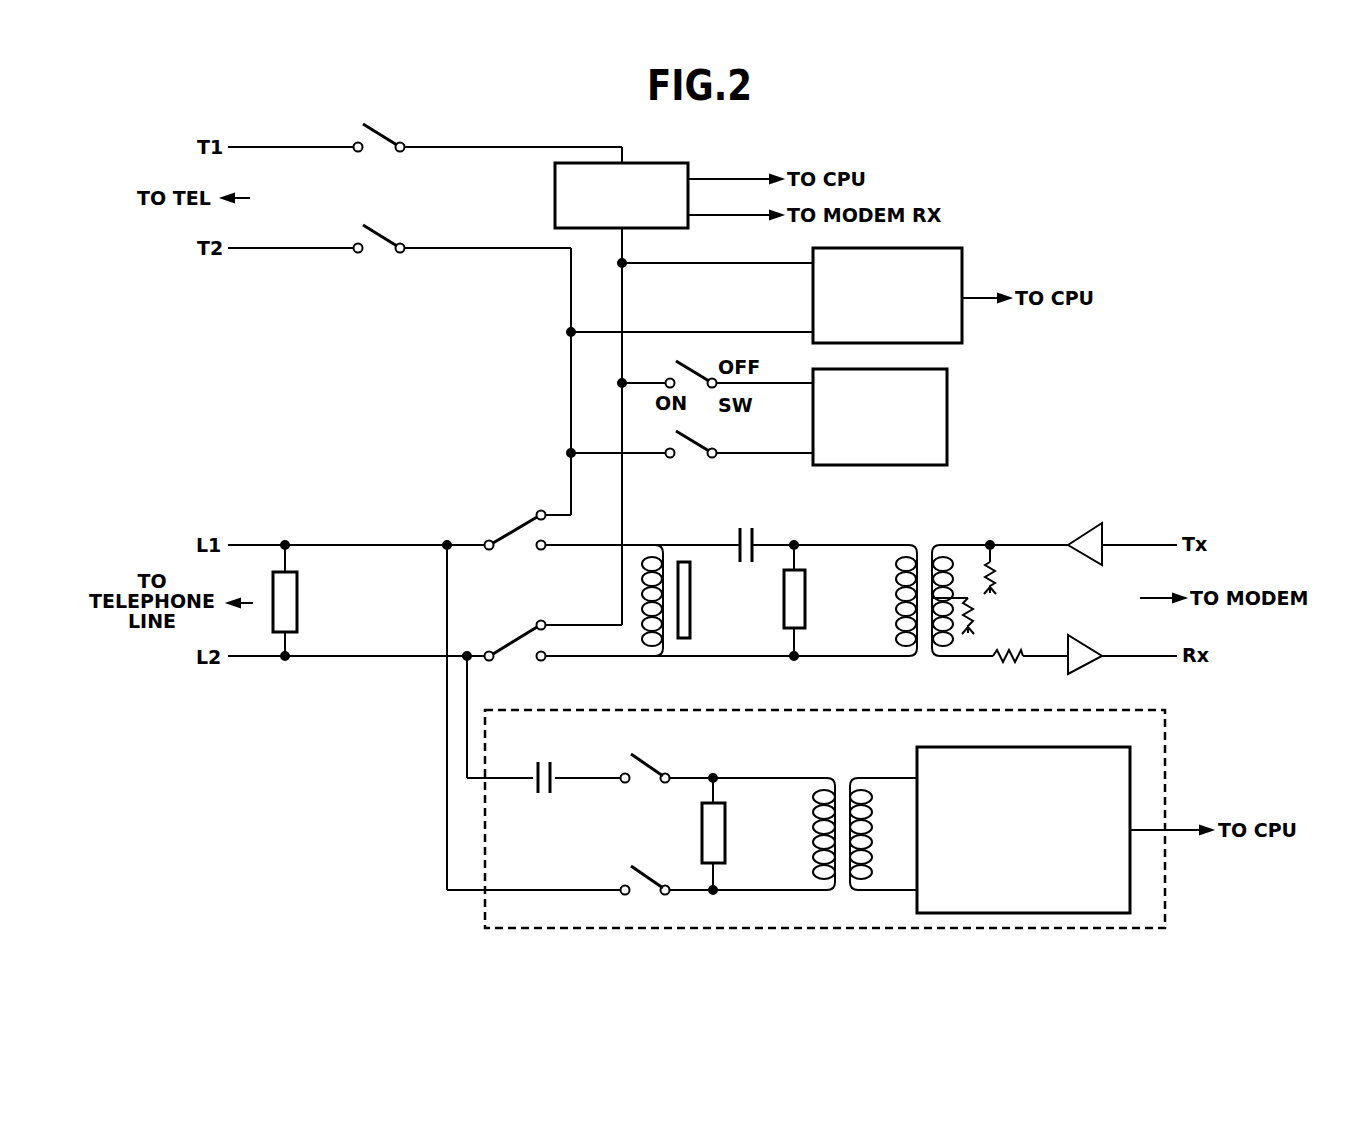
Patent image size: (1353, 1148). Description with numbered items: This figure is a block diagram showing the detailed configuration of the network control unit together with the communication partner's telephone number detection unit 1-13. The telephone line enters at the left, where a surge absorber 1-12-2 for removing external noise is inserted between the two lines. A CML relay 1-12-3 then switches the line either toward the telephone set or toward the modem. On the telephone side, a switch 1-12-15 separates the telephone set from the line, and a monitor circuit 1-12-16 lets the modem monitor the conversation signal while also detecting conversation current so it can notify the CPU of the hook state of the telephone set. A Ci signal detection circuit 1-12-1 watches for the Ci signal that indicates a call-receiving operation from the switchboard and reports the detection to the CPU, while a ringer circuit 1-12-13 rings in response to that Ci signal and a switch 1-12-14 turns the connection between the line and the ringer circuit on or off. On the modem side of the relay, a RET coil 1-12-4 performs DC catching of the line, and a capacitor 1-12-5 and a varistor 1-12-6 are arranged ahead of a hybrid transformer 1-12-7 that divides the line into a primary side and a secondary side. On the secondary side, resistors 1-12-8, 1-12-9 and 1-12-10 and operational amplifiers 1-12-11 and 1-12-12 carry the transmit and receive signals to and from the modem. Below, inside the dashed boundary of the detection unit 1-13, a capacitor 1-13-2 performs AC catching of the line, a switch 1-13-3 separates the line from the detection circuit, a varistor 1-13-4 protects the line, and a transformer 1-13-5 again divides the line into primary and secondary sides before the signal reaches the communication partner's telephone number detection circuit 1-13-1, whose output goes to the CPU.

The Ci signal detection circuit 1-12-1 is at (927, 295).
The surge absorber 1-12-2 is at (347, 600).
The CML relay 1-12-3 is at (541, 575).
The RET coil 1-12-4 is at (705, 600).
The capacitor 1-12-5 is at (784, 528).
The varistor 1-12-6 is at (833, 600).
The hybrid transformer 1-12-7 is at (924, 575).
The resistor 1-12-8 is at (1026, 569).
The resistor 1-12-9 is at (991, 617).
The resistor 1-12-10 is at (1023, 669).
The operational amplifier 1-12-11 is at (1099, 531).
The operational amplifier 1-12-12 is at (1121, 648).
The ringer circuit 1-12-13 is at (923, 417).
The switch 1-12-14 is at (690, 455).
The switch 1-12-15 is at (381, 202).
The monitor circuit 1-12-16 is at (648, 183).
The communication partner's telephone number detection unit 1-13 is at (1165, 757).
The communication partner's telephone number detection circuit 1-13-1 is at (1023, 815).
The capacitor 1-13-2 is at (544, 778).
The switch 1-13-3 is at (642, 824).
The varistor 1-13-4 is at (752, 834).
The transformer 1-13-5 is at (840, 808).